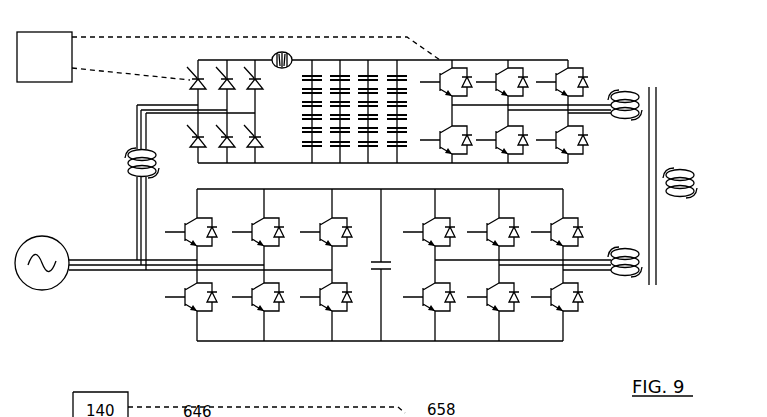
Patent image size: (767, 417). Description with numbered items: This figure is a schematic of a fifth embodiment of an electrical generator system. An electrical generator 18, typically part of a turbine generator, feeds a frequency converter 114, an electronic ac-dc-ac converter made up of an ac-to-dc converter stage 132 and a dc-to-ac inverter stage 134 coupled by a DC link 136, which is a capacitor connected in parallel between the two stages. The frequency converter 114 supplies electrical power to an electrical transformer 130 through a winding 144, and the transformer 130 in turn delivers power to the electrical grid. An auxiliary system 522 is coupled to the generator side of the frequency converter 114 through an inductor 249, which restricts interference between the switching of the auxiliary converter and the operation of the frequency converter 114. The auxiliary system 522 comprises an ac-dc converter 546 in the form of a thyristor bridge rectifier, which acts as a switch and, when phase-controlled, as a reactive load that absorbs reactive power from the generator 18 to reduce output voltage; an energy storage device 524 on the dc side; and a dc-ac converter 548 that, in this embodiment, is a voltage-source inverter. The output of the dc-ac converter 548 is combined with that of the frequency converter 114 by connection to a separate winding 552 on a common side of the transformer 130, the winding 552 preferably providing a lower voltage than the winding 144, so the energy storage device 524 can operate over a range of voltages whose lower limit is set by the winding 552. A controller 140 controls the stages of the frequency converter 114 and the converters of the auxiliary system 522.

The controller 140 is at (30, 66).
The auxiliary system 522 is at (586, 58).
The ac-dc converter 546 is at (196, 58).
The energy storage device 524 is at (350, 166).
The dc-ac converter 548 is at (490, 57).
The winding 552 is at (640, 88).
The electrical transformer 130 is at (692, 174).
The winding 144 is at (628, 288).
The inductor 249 is at (127, 165).
The electrical generator 18 is at (42, 289).
The frequency converter 114 is at (192, 327).
The ac-to-dc converter stage 132 is at (320, 342).
The DC link 136 is at (382, 322).
The dc-to-ac inverter stage 134 is at (487, 343).